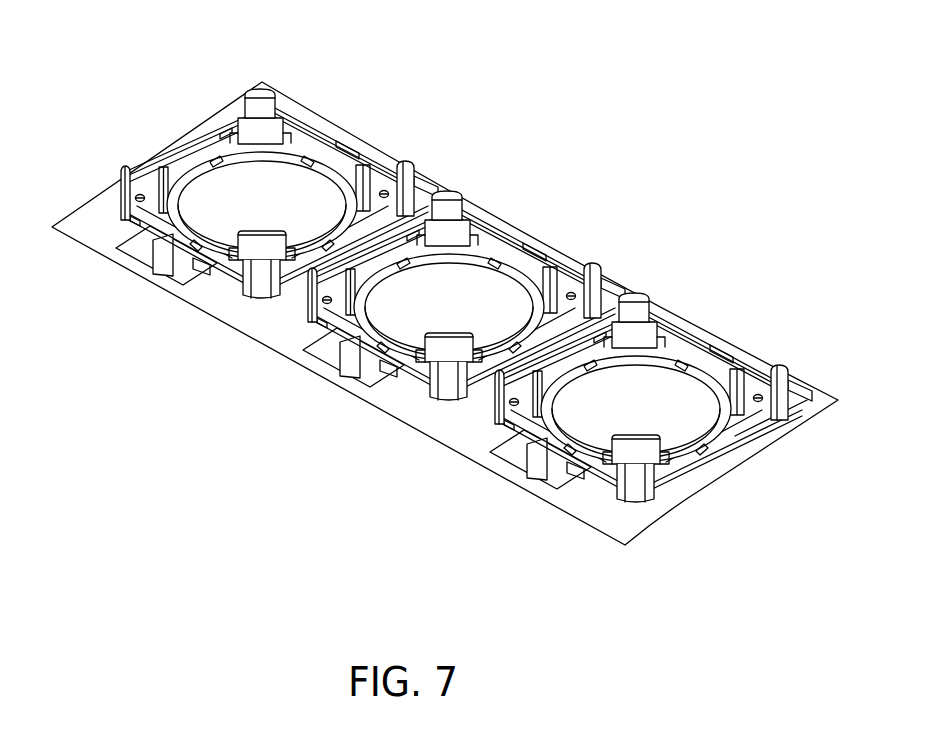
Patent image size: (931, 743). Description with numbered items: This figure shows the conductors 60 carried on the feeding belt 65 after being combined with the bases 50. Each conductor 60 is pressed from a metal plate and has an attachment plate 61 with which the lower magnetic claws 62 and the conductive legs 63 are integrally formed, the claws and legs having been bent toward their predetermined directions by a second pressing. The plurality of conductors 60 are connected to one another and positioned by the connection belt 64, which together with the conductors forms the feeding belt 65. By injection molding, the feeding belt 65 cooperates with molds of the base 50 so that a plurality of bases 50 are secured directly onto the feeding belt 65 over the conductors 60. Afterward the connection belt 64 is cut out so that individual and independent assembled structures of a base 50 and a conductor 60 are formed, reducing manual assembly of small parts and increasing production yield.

The base 50 is at (185, 265).
The conductor 60 is at (278, 199).
The attachment plate 61 is at (305, 142).
The lower magnetic claws 62 is at (270, 132).
The conductive legs 63 is at (163, 253).
The connection belt 64 is at (427, 183).
The feeding belt 65 is at (460, 430).